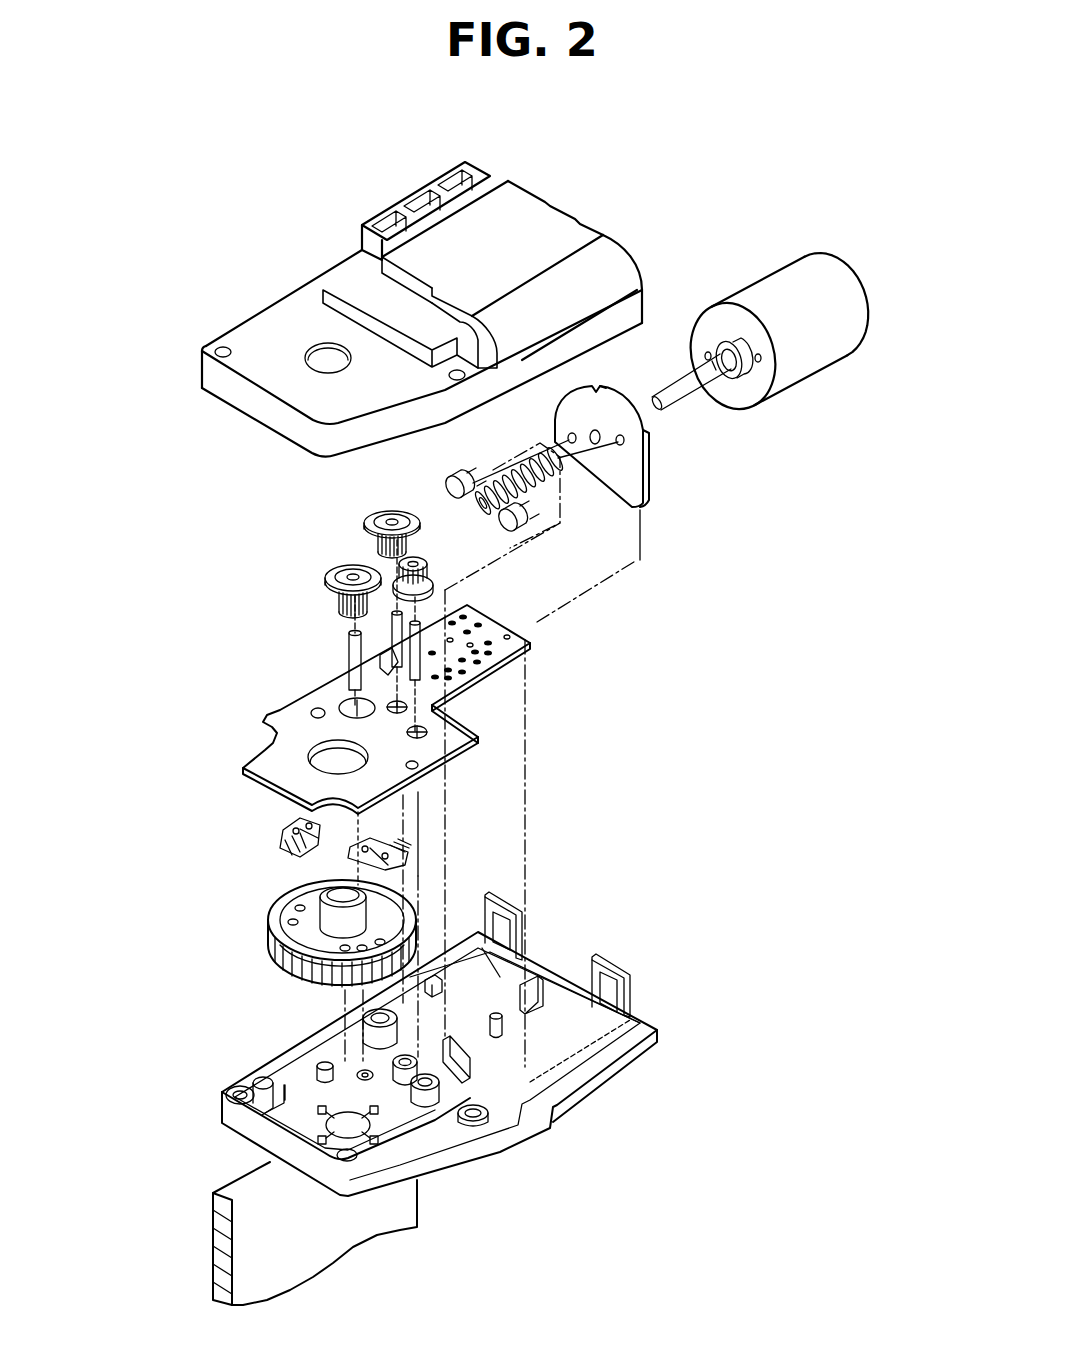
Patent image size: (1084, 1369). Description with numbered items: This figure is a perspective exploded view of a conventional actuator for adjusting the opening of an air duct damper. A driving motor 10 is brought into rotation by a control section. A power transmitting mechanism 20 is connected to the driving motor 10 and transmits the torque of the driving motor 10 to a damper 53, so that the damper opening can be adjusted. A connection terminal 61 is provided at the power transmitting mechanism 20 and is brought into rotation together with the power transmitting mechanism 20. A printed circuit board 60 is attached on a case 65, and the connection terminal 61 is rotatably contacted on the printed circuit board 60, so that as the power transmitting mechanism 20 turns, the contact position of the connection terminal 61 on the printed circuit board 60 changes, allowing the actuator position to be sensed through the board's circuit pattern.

The driving motor 10 is at (763, 263).
The power transmitting mechanism 20 is at (463, 832).
The damper 53 is at (360, 1232).
The printed circuit board 60 is at (269, 715).
The connection terminal 61 is at (279, 831).
The case 65 is at (541, 200).